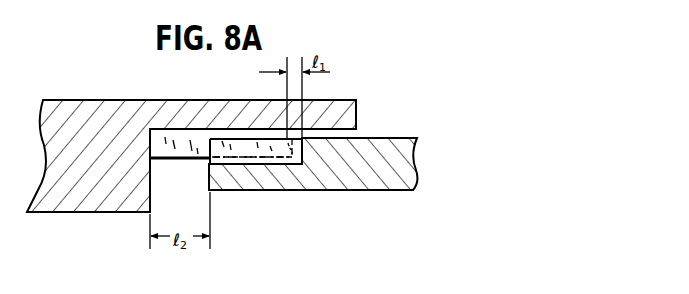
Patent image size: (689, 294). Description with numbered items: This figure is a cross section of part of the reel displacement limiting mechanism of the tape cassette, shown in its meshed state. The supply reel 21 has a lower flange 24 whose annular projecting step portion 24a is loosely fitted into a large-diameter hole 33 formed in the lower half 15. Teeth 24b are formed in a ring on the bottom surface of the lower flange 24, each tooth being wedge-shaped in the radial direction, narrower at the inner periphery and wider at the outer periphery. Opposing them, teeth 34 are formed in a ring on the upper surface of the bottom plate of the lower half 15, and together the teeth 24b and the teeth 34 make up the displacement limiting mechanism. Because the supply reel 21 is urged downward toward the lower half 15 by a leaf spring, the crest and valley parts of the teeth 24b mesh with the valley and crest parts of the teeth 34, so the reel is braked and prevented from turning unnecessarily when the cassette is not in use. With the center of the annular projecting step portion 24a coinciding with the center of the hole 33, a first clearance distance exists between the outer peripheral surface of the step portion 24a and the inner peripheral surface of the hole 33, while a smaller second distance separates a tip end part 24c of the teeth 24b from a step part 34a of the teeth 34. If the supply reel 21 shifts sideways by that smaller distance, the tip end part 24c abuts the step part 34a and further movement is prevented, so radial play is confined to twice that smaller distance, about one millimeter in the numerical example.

The supply reel 21 is at (74, 97).
The lower flange 24 is at (112, 103).
The annular projecting step portion 24a is at (100, 205).
The teeth 24b is at (177, 134).
The tip end part 24c is at (289, 162).
The hole 33 is at (208, 176).
The teeth 34 is at (246, 152).
The step part 34a is at (295, 162).
The lower half 15 is at (266, 189).